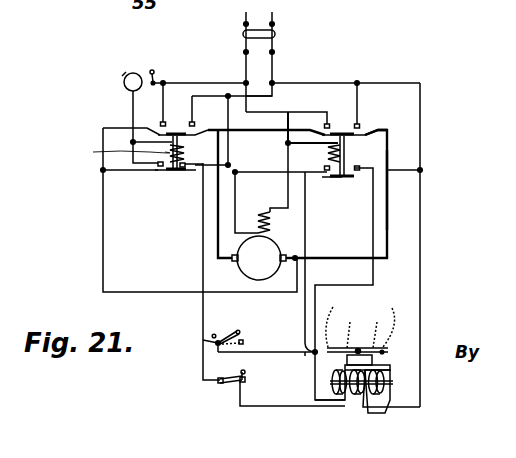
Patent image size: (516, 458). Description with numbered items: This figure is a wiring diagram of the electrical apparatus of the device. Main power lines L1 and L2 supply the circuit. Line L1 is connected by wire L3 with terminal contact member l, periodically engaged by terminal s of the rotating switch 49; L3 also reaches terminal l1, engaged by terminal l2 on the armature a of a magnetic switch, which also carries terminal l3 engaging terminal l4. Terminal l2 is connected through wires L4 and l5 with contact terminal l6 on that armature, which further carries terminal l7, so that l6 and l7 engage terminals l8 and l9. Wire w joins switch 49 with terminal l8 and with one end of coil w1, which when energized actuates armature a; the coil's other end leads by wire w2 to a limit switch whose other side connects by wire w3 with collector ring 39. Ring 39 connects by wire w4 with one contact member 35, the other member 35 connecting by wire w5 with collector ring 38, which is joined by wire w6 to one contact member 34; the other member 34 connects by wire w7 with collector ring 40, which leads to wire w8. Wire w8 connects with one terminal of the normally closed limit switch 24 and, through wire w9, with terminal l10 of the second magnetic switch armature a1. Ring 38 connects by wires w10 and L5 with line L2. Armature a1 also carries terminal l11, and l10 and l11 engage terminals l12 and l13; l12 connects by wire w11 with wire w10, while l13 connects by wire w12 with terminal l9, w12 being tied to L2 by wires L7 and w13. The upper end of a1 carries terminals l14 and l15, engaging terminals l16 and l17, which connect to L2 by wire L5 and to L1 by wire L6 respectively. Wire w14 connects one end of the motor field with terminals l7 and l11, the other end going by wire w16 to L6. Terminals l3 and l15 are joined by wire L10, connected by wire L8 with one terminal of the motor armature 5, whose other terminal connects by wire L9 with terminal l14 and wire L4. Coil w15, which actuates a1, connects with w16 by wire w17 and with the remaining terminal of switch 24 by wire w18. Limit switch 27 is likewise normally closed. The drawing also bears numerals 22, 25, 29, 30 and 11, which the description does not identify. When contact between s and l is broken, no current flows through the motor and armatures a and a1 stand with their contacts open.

The main power line L1 is at (244, 14).
The main power line L2 is at (274, 14).
The wire L3 is at (200, 82).
The wire L4 is at (103, 196).
The wire L5 is at (318, 83).
The wire L6 is at (274, 110).
The wire L7 is at (254, 96).
The wire L8 is at (218, 228).
The wire L9 is at (388, 192).
The wire L10 is at (296, 112).
The terminal contact member l is at (163, 78).
The terminal l1 is at (164, 120).
The terminal l2 is at (170, 133).
The terminal l3 is at (195, 134).
The terminal l4 is at (193, 123).
The wire l5 is at (127, 173).
The contact terminal l6 is at (163, 173).
The terminal l7 is at (185, 173).
The terminal l8 is at (158, 167).
The terminal l9 is at (185, 168).
The contact terminal l10 is at (352, 180).
The contact terminal l11 is at (333, 180).
The terminal l12 is at (358, 172).
The terminal l13 is at (316, 175).
The terminal l14 is at (362, 130).
The terminal l15 is at (330, 124).
The terminal l16 is at (360, 126).
The terminal l17 is at (332, 118).
The wire w is at (133, 104).
The magnetic coil w1 is at (120, 152).
The wire w2 is at (203, 272).
The wire w3 is at (268, 405).
The wire w4 is at (395, 377).
The wire w5 is at (372, 366).
The wire w6 is at (246, 371).
The wire w7 is at (340, 376).
The wire w8 is at (287, 347).
The wire w9 is at (388, 246).
The wire w10 is at (421, 252).
The wire w11 is at (405, 166).
The wire w12 is at (285, 143).
The wire w13 is at (232, 119).
The wire w14 is at (236, 200).
The coil w15 is at (392, 152).
The wire w16 is at (289, 200).
The wire w17 is at (328, 151).
The wire w18 is at (306, 246).
The armature a is at (186, 147).
The second magnetic switch armature a1 is at (356, 148).
The terminal s is at (151, 70).
The rotating switch 49 is at (127, 73).
The motor armature 5 is at (242, 273).
The lever 22 is at (212, 332).
The limit switch 24 is at (242, 338).
The lever 25 is at (243, 372).
The limit switch 27 is at (226, 384).
The cam 29 is at (334, 317).
The cam 30 is at (395, 318).
The contact members 34 is at (300, 367).
The contact members 35 is at (434, 342).
The collector ring 38 is at (375, 404).
The collector ring 39 is at (385, 393).
The collector ring 40 is at (330, 393).
The shaft 11 is at (392, 386).